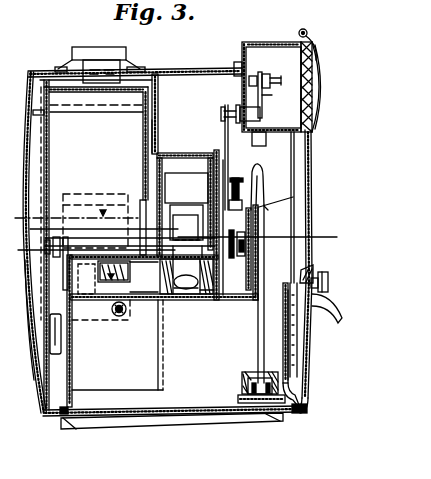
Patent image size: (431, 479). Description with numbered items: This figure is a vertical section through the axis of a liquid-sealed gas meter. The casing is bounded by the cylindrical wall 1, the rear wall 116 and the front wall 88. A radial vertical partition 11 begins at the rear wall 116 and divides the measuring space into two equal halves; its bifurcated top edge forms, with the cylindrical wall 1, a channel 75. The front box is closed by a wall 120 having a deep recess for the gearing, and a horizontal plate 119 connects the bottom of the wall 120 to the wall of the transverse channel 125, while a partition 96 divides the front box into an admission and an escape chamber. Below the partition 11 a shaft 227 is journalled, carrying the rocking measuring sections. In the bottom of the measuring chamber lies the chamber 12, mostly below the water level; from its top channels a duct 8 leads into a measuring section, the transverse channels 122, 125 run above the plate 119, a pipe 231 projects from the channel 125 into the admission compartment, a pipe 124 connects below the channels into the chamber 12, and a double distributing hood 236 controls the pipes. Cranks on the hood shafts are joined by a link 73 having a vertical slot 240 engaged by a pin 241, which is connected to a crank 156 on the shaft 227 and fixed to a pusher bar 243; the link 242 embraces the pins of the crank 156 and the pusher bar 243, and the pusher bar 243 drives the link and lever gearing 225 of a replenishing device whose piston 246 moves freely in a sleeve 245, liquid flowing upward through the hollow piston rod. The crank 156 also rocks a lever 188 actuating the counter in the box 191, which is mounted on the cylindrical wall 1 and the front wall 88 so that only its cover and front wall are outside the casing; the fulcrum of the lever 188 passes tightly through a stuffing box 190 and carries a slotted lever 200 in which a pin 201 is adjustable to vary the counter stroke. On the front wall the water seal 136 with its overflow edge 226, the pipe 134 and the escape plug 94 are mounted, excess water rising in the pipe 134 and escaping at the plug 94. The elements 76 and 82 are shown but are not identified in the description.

The cylindrical wall 1 is at (171, 71).
The duct 8 is at (111, 280).
The radial vertical partition 11 is at (95, 222).
The chamber 12 is at (159, 334).
The link 73 is at (240, 265).
The channel 75 is at (159, 90).
The cap 76 is at (100, 57).
The strip 82 is at (55, 354).
The front wall 88 is at (307, 157).
The escape plug 94 is at (324, 280).
The partition 96 is at (166, 136).
The rear wall 116 is at (30, 322).
The horizontal plate 119 is at (236, 234).
The wall 120 is at (255, 221).
The transverse channel 122 is at (180, 289).
The pipe 124 is at (119, 317).
The transverse channel 125 is at (205, 292).
The pipe 134 is at (303, 337).
The water seal 136 is at (282, 330).
The crank 156 is at (223, 201).
The lever 188 is at (222, 121).
The stuffing box 190 is at (242, 107).
The box 191 is at (252, 47).
The slotted lever 200 is at (261, 74).
The pin 201 is at (280, 94).
The hollow piston rod 225 is at (258, 322).
The overflow edge 226 is at (285, 300).
The shaft 227 is at (77, 250).
The pipe 231 is at (171, 276).
The double distributing hood 236 is at (180, 175).
The vertical slot 240 is at (247, 250).
The pin 241 is at (250, 237).
The link 242 is at (235, 257).
The pusher bar 243 is at (248, 184).
The sleeve 245 is at (249, 393).
The piston 246 is at (257, 372).